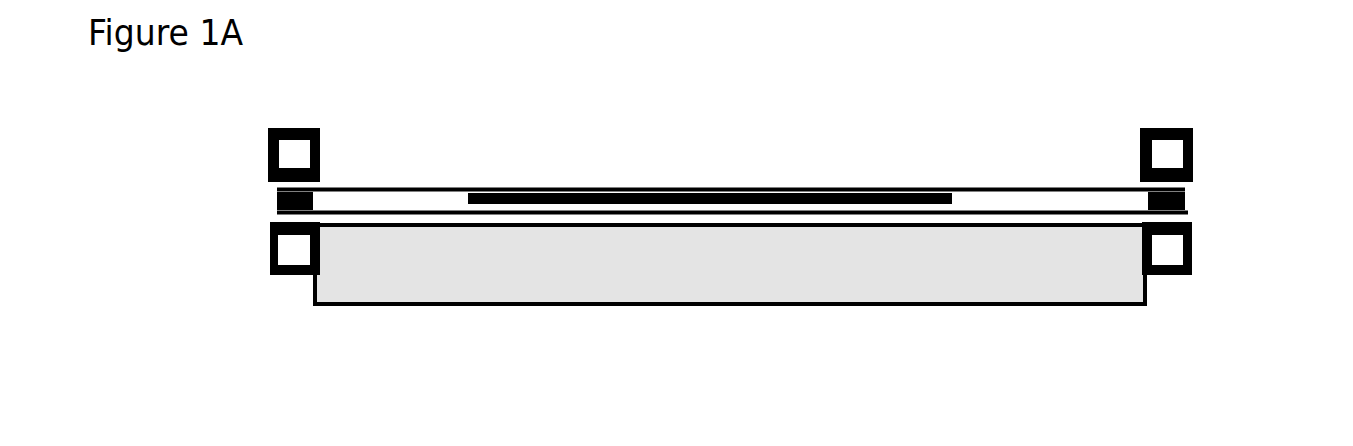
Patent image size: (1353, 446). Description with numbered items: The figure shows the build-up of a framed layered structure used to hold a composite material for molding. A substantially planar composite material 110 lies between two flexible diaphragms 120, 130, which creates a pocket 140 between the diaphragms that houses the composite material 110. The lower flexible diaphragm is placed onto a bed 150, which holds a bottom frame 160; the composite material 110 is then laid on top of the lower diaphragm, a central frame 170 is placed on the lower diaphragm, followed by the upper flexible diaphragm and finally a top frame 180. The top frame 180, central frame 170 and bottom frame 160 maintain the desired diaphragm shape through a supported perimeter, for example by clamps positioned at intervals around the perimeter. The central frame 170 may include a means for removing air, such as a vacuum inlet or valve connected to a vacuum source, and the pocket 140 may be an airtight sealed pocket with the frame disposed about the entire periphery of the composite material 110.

The composite material 110 is at (550, 198).
The flexible diaphragm 120 is at (985, 210).
The flexible diaphragm 130 is at (797, 188).
The pocket 140 is at (373, 200).
The bed 150 is at (373, 304).
The bottom frame 160 is at (273, 268).
The central frame 170 is at (275, 200).
The top frame 180 is at (317, 130).